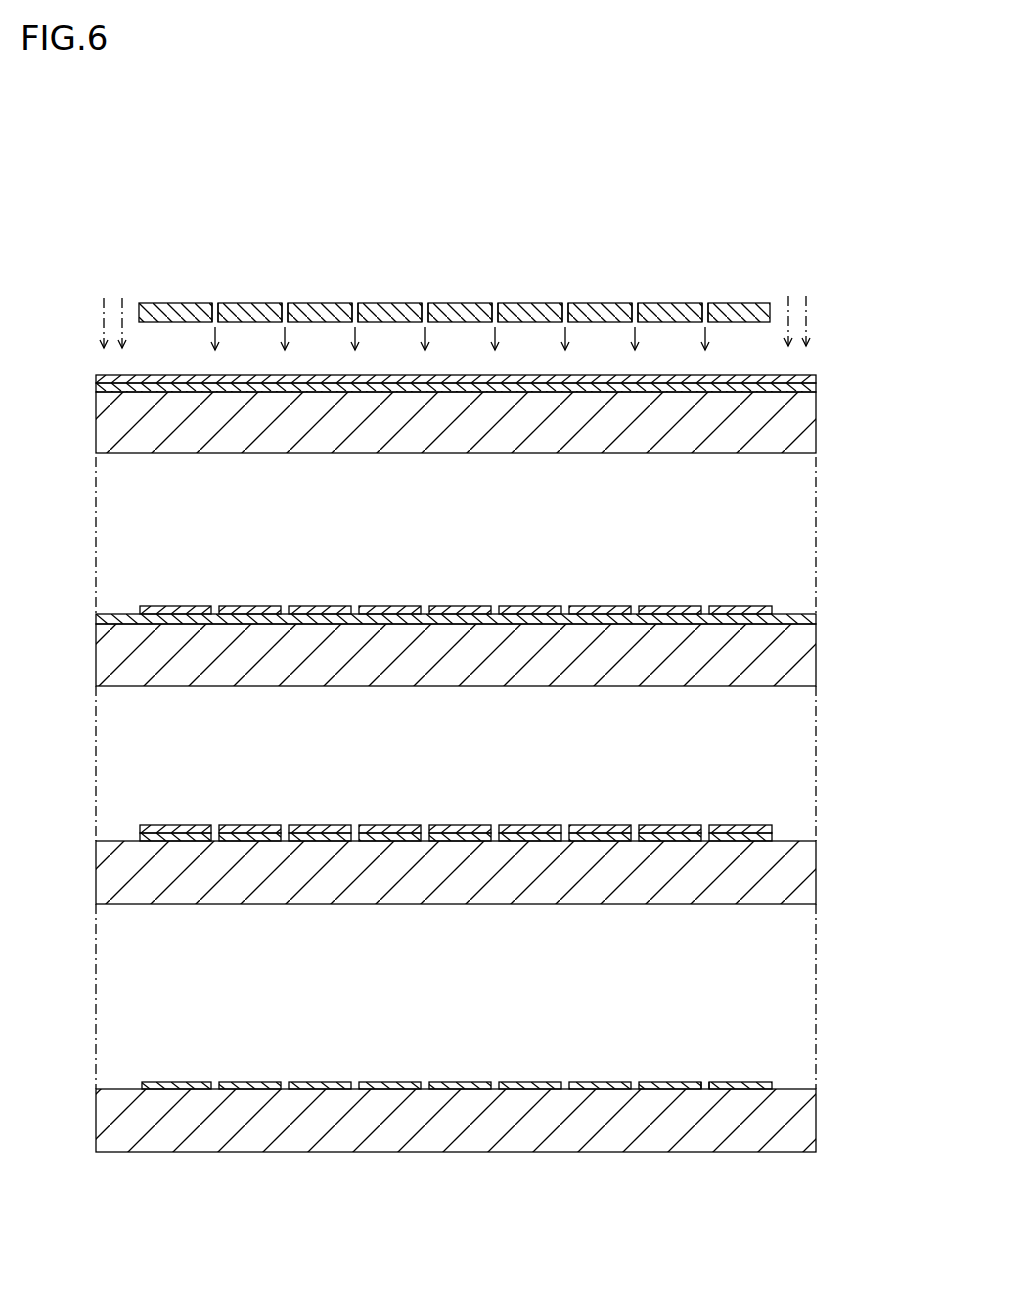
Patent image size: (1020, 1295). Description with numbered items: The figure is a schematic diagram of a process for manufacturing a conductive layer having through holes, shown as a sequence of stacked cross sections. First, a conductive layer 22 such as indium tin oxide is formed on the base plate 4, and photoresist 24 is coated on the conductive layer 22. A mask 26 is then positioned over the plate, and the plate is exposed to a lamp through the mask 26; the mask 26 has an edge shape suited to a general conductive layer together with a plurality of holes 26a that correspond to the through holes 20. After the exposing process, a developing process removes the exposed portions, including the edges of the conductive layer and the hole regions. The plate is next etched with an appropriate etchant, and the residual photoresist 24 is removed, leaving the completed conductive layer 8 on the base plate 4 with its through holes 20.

The base plate 4 is at (816, 435).
The conductive layer 8 is at (390, 1082).
The through holes 20 is at (703, 1080).
The conductive layer 22 is at (816, 388).
The photoresist 24 is at (816, 375).
The mask 26 is at (517, 283).
The holes 26a is at (704, 303).